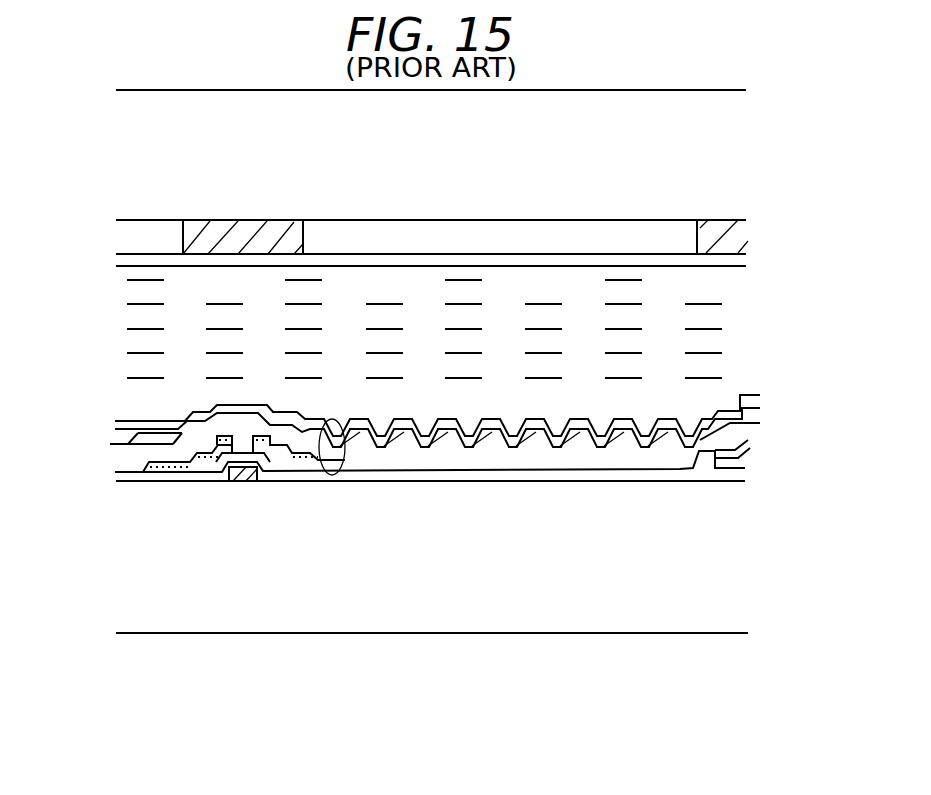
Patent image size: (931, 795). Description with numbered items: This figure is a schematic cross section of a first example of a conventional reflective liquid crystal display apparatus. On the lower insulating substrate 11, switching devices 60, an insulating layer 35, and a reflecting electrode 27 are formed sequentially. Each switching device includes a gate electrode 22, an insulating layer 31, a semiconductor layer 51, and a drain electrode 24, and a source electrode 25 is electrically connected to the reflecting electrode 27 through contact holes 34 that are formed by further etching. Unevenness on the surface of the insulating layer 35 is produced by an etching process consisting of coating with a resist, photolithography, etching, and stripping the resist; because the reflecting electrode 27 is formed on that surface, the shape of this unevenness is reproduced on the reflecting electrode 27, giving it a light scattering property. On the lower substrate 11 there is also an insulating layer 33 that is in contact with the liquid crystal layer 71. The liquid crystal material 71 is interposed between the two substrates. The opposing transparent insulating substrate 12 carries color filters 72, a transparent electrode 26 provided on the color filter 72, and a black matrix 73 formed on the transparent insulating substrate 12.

The insulating substrate 11 is at (712, 548).
The transparent insulating substrate 12 is at (127, 130).
The gate electrode 22 is at (237, 478).
The drain electrode 24 is at (182, 478).
The source electrode 25 is at (333, 478).
The transparent electrode 26 is at (128, 266).
The reflecting electrode 27 is at (722, 427).
The insulating layer 31 is at (302, 478).
The insulating layer 33 is at (647, 413).
The contact holes 34 is at (310, 438).
The insulating layer 35 is at (150, 453).
The semiconductor layer 51 is at (273, 478).
The switching devices 60 is at (430, 597).
The liquid crystal material 71 is at (158, 360).
The color filters 72 is at (320, 242).
The black matrix 73 is at (737, 238).